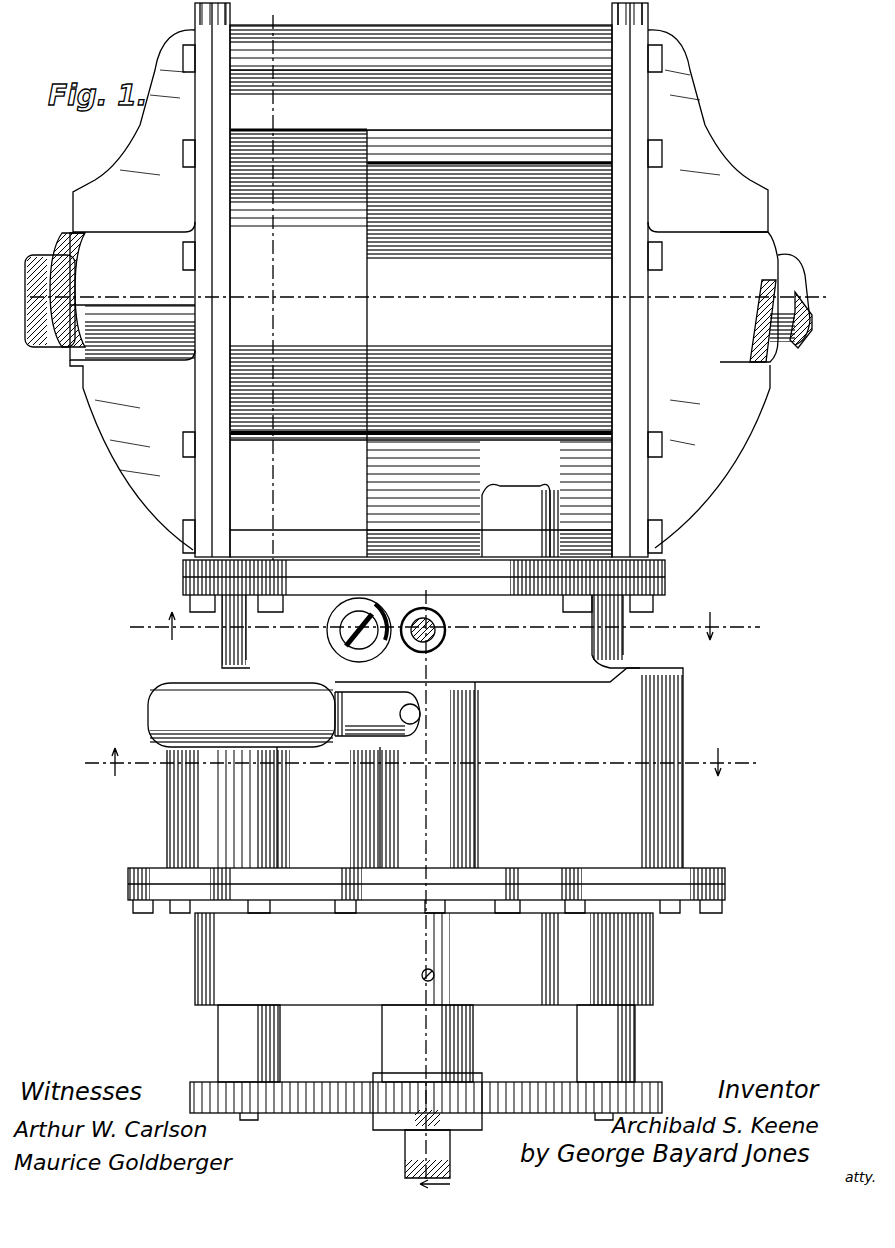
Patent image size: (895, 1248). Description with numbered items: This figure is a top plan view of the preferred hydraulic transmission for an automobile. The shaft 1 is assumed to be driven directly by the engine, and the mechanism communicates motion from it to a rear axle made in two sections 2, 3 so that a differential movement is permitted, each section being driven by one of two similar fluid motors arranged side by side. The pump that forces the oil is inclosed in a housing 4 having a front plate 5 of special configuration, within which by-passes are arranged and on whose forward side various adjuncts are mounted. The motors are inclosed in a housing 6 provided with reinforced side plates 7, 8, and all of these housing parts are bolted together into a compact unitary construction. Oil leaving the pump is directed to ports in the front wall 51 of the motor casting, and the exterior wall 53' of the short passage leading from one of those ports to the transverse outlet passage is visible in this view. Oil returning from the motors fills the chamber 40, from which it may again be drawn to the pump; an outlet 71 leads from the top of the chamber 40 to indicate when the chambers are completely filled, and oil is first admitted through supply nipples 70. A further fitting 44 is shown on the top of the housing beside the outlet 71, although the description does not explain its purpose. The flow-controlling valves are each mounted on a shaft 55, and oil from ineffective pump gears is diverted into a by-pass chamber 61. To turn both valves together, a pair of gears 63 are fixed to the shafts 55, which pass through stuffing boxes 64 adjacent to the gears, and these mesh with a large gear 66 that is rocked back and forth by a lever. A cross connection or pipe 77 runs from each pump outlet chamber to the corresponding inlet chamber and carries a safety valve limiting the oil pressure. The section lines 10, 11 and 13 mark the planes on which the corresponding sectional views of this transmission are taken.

The shaft 1 is at (195, 842).
The rear axle section 2 is at (45, 260).
The rear axle section 3 is at (790, 252).
The housing 4 is at (755, 888).
The front plate 5 is at (210, 940).
The housing 6 is at (585, 192).
The side plate 7 is at (195, 418).
The side plate 8 is at (648, 480).
The section line 10- 10 is at (411, 762).
The section line 11- 11 is at (445, 626).
The section line 13- 13 is at (55, 322).
The chamber 40 is at (623, 655).
The bearing cap 44 is at (435, 630).
The front wall 51 is at (665, 575).
The exterior wall 53' is at (521, 507).
The shaft 55 is at (256, 1126).
The by-pass chamber 61 is at (222, 1027).
The gear 63 is at (190, 1095).
The stuffing box 64 is at (585, 1027).
The large gear 66 is at (485, 1112).
The supply nipple 70 is at (415, 705).
The outlet 71 is at (340, 632).
The cross connection pipe 77 is at (282, 695).